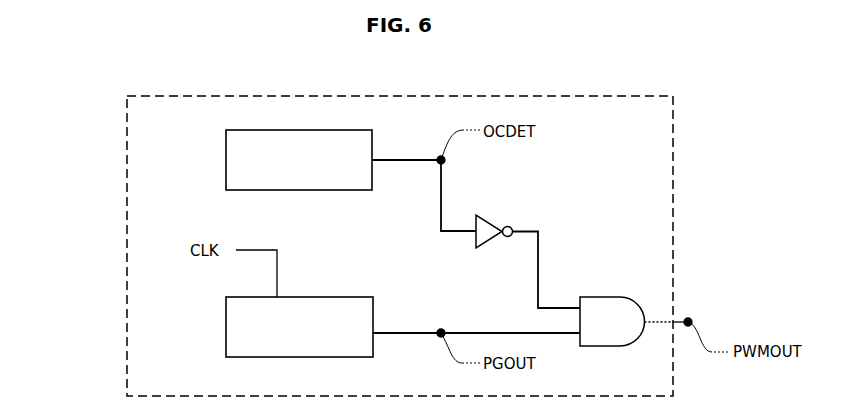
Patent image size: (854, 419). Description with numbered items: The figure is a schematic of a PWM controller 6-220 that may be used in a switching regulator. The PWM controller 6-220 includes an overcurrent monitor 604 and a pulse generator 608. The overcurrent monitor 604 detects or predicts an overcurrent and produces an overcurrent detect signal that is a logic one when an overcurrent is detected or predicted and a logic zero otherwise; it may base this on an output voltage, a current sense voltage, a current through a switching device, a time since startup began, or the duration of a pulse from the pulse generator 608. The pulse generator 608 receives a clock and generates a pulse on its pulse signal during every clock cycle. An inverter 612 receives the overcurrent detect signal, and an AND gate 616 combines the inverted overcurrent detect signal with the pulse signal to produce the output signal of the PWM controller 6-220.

The PWM controller 6-220 is at (126, 245).
The overcurrent monitor 604 is at (226, 160).
The pulse generator 608 is at (226, 323).
The inverter 612 is at (489, 247).
The AND gate 616 is at (602, 297).